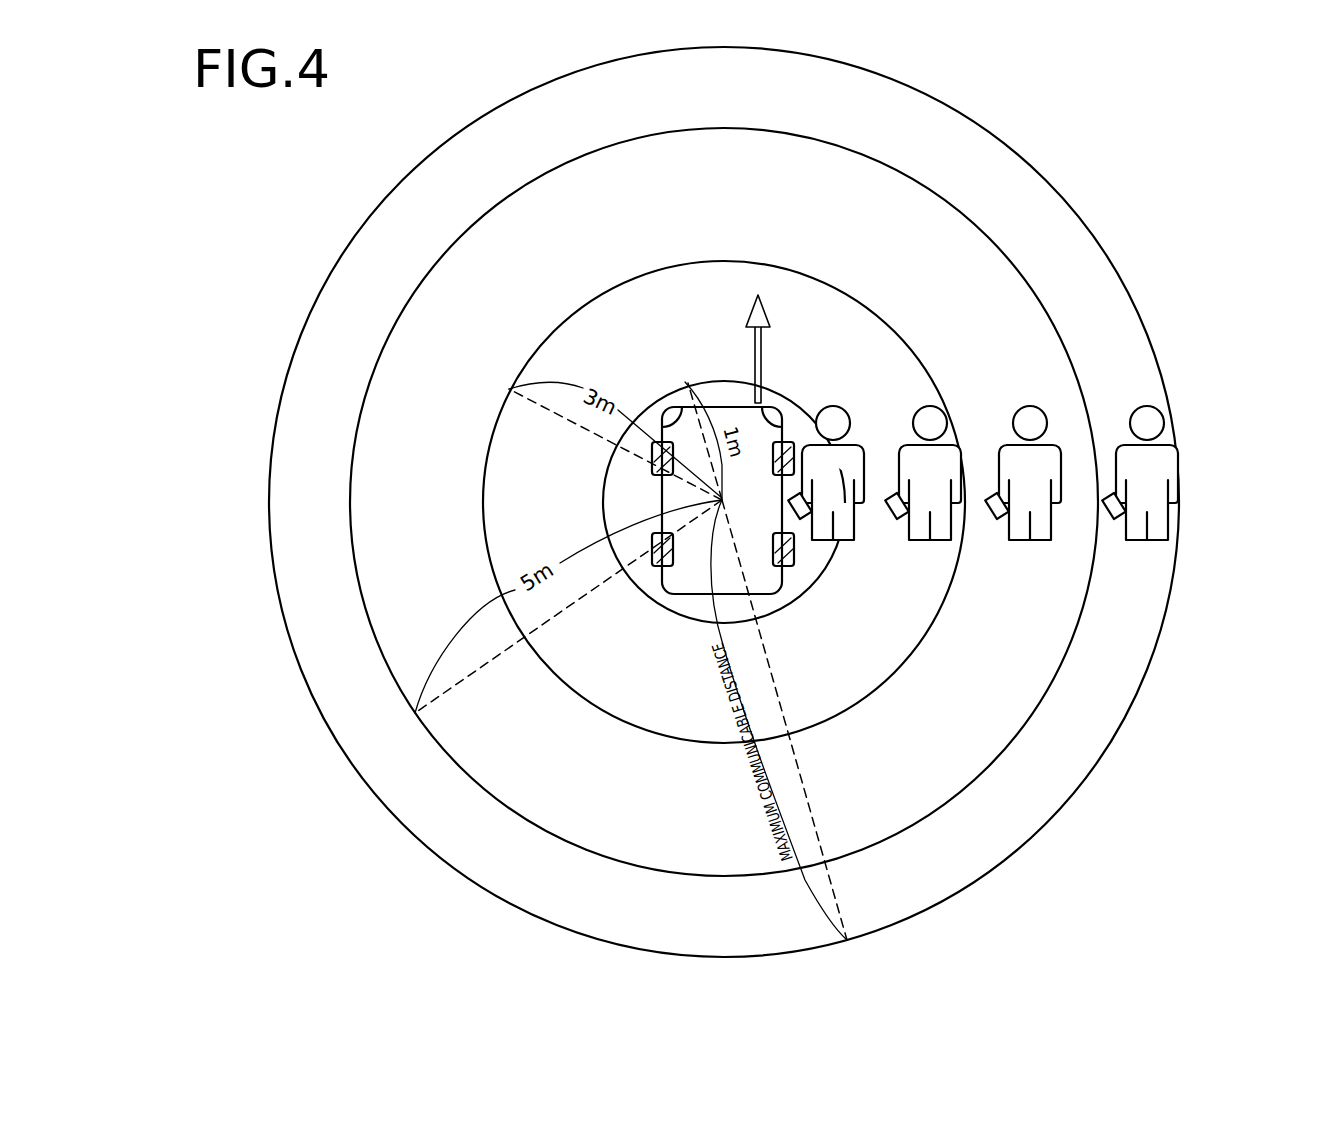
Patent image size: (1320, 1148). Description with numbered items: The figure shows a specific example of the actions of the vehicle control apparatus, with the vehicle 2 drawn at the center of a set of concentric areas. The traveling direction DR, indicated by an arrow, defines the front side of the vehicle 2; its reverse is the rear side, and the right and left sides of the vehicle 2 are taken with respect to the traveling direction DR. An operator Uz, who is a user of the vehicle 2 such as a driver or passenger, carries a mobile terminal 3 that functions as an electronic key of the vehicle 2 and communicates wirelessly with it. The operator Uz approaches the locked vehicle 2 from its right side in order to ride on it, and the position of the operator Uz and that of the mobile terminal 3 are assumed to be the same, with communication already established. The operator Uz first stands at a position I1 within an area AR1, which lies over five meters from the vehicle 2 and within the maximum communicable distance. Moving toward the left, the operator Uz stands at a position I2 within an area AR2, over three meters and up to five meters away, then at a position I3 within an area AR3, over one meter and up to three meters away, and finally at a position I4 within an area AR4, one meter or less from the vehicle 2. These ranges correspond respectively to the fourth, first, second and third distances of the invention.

The vehicle 2 is at (737, 405).
The mobile terminal 3 is at (803, 518).
The area AR1 is at (858, 97).
The area AR2 is at (821, 202).
The area AR3 is at (854, 344).
The area AR4 is at (639, 496).
The operator Uz is at (1020, 487).
The traveling direction DR is at (777, 349).
The position I1 is at (1145, 556).
The position I2 is at (1032, 556).
The position I3 is at (917, 556).
The position I4 is at (826, 552).